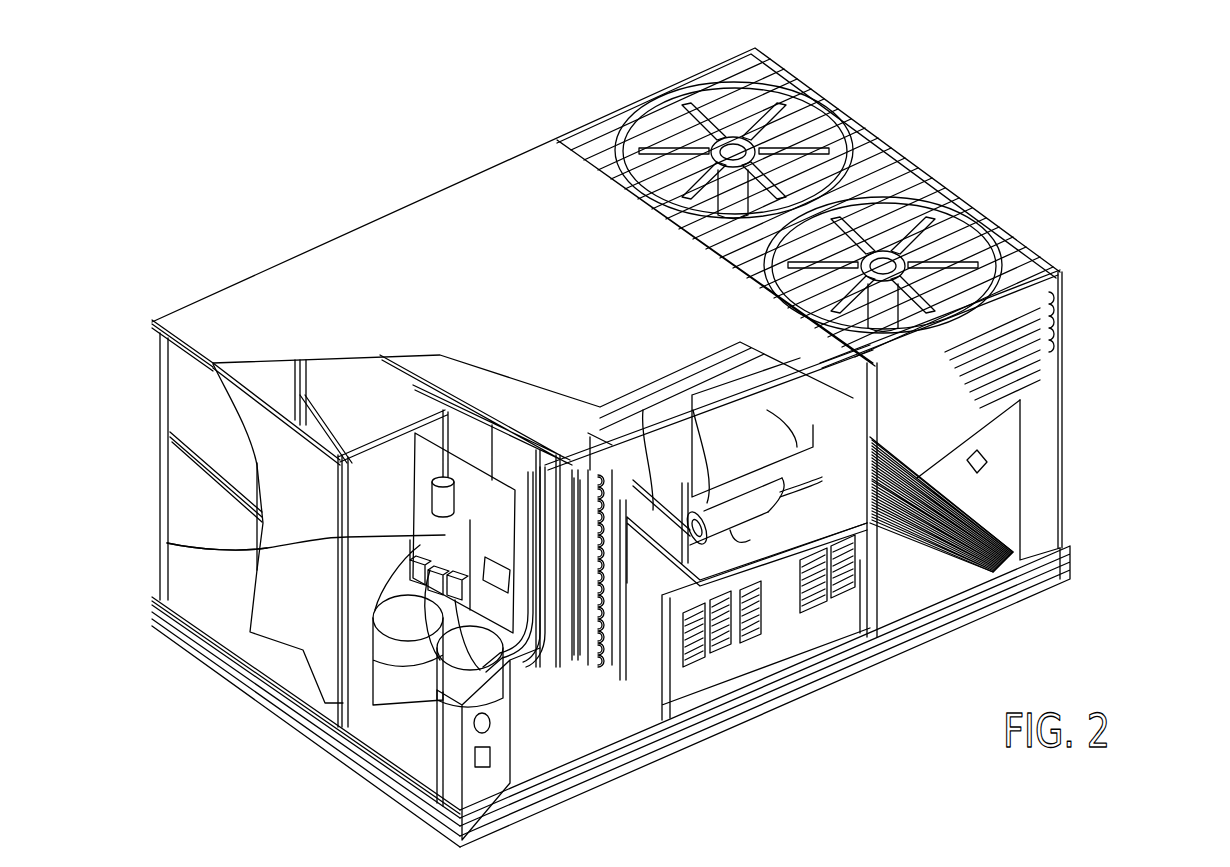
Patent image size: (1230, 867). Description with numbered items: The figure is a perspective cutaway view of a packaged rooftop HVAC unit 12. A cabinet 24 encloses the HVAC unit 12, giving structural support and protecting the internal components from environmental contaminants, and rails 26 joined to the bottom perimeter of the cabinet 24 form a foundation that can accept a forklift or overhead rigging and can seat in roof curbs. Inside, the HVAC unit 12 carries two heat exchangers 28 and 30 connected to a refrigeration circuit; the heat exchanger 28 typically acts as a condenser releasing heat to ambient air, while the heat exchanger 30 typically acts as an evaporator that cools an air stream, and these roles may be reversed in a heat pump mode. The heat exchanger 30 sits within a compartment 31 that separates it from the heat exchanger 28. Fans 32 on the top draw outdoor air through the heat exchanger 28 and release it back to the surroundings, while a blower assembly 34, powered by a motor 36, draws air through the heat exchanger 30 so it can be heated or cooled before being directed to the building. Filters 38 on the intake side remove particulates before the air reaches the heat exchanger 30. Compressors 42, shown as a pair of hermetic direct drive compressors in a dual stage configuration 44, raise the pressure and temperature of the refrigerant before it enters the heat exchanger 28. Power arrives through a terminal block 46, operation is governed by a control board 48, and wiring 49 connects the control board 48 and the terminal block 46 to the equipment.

The HVAC unit 12 is at (338, 152).
The cabinet 24 is at (196, 578).
The rails 26 is at (222, 662).
The heat exchanger 28 is at (1055, 333).
The heat exchanger 30 is at (620, 680).
The compartment 31 is at (617, 503).
The fans 32 is at (910, 232).
The blower assembly 34 is at (798, 459).
The motor 36 is at (735, 508).
The filters 38 is at (570, 493).
The compressors 42 is at (380, 650).
The dual stage configuration 44 is at (375, 600).
The terminal block 46 is at (167, 543).
The control board 48 is at (497, 560).
The wiring 49 is at (592, 437).